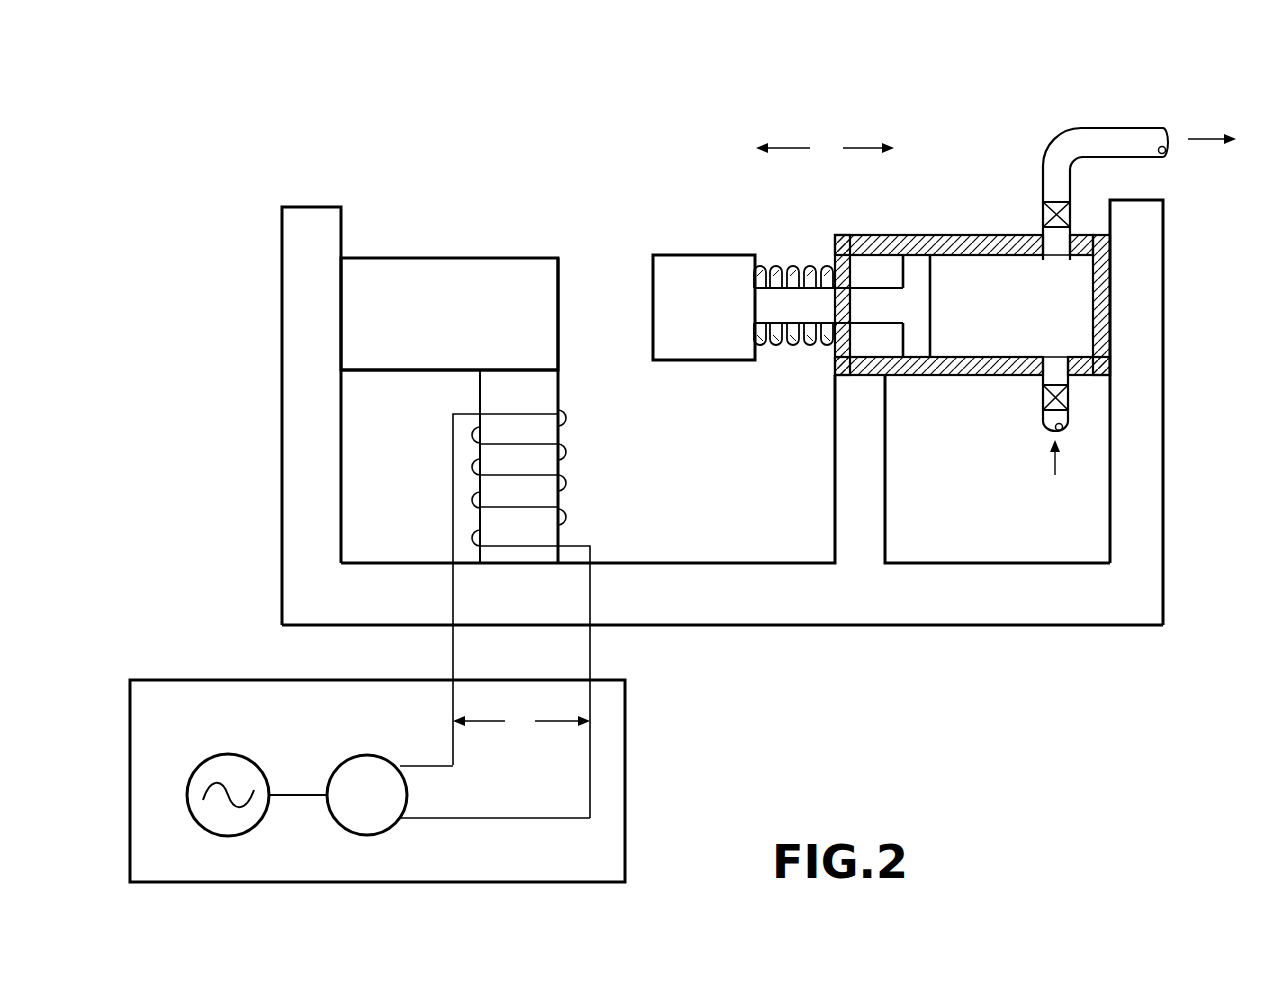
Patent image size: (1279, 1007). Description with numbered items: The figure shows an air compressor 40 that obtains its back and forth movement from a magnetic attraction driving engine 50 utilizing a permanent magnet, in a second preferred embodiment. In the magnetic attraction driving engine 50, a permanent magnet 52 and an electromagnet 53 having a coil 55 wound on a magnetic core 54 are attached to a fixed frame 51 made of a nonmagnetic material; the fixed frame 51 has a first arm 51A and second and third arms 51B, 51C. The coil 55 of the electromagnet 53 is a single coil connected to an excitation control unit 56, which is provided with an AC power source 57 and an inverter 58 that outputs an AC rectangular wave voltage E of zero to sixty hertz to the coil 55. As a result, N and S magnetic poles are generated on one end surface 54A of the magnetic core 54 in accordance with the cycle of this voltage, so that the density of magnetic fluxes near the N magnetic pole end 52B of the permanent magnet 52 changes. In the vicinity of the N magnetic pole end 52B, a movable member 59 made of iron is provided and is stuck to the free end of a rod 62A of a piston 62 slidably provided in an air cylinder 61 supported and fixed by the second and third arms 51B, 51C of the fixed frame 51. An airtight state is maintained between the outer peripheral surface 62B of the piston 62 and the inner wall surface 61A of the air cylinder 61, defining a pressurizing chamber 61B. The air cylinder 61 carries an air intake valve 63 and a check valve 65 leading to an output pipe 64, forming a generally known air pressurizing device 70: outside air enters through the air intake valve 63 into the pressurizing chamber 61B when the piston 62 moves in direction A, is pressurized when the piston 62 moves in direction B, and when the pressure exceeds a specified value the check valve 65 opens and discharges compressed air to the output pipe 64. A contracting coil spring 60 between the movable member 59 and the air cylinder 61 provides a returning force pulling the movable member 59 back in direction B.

The air compressor 40 is at (664, 134).
The magnetic attraction driving engine 50 is at (468, 228).
The fixed frame 51 is at (729, 453).
The first arm of fixed frame 51A is at (282, 372).
The second arm of fixed frame 51B is at (1148, 443).
The third arm of fixed frame 51C is at (851, 455).
The permanent magnet 52 is at (488, 258).
The N magnetic pole end 52B is at (560, 298).
The electromagnet 53 is at (610, 485).
The magnetic core 54 is at (449, 435).
The end surface of magnetic core 54A is at (517, 370).
The coil 55 is at (566, 420).
The excitation control unit 56 is at (427, 781).
The AC power source 57 is at (225, 755).
The inverter 58 is at (356, 757).
The movable member 59 is at (697, 258).
The contracting coil spring 60 is at (783, 347).
The air cylinder 61 is at (972, 312).
The inner wall surface of air cylinder 61A is at (947, 350).
The pressurizing chamber 61B is at (1017, 358).
The piston 62 is at (854, 310).
The rod of piston 62A is at (887, 298).
The outer peripheral surface of piston 62B is at (917, 358).
The air intake valve 63 is at (1069, 398).
The output pipe 64 is at (1102, 137).
The check valve 65 is at (1043, 216).
The air pressurizing device 70 is at (986, 152).